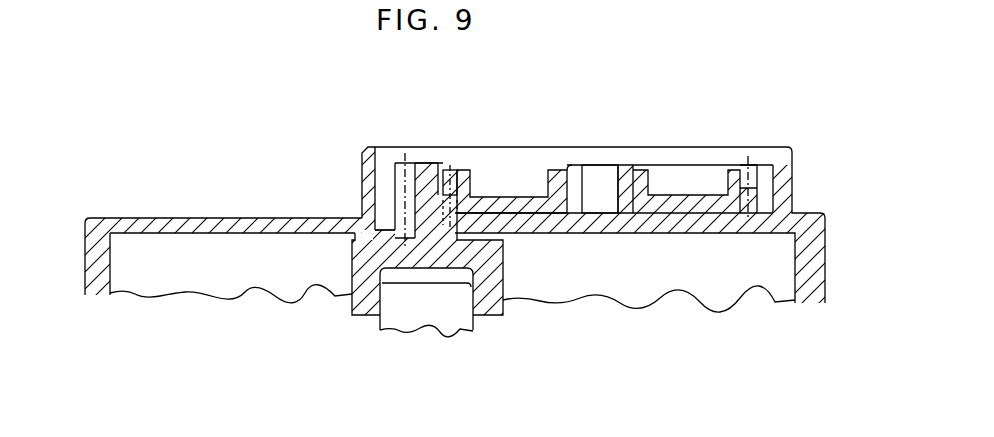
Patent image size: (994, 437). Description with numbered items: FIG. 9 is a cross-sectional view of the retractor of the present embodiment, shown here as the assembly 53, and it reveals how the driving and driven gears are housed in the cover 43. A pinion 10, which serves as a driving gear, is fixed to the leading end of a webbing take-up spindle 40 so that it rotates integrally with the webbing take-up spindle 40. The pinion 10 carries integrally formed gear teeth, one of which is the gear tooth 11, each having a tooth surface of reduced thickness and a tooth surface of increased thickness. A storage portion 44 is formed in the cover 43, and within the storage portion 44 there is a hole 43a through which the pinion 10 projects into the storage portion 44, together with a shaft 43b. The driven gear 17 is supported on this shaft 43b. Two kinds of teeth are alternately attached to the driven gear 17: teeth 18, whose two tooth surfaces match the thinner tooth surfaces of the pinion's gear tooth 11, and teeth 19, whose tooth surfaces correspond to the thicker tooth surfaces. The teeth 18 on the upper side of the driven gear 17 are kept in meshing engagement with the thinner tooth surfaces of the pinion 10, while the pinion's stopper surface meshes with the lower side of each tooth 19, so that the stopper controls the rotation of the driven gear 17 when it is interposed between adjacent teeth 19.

The assembly 53 is at (190, 158).
The gear tooth 11 is at (400, 164).
The pinion 10 is at (427, 173).
The teeth 18 is at (453, 170).
The teeth 19 is at (487, 175).
The shaft 43b is at (623, 167).
The driven gear 17 is at (657, 181).
The storage portion 44 is at (728, 158).
The cover 43 is at (828, 239).
The hole 43a is at (388, 212).
The webbing take-up spindle 40 is at (431, 320).